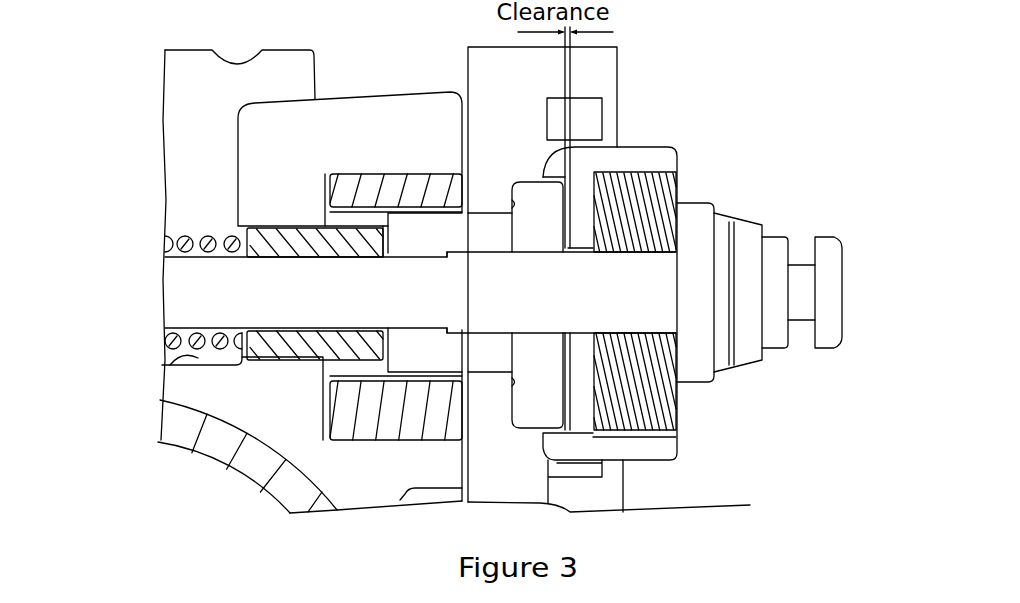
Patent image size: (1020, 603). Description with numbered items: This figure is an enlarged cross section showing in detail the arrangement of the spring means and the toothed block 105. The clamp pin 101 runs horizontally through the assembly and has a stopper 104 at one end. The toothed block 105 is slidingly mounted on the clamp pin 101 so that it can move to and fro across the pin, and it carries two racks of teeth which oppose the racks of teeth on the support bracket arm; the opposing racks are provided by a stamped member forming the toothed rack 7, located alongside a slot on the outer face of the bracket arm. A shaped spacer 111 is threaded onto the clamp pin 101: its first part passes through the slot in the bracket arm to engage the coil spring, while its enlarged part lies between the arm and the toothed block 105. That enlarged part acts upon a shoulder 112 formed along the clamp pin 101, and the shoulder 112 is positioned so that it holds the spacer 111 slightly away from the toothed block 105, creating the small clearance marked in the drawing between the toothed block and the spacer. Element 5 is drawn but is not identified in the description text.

The pump housing 5 is at (160, 375).
The toothed rack 7 is at (570, 80).
The clamp pin 101 is at (172, 320).
The stopper 104 is at (745, 222).
The toothed block 105 is at (648, 147).
The shaped spacer 111 is at (283, 352).
The shoulder 112 is at (443, 250).